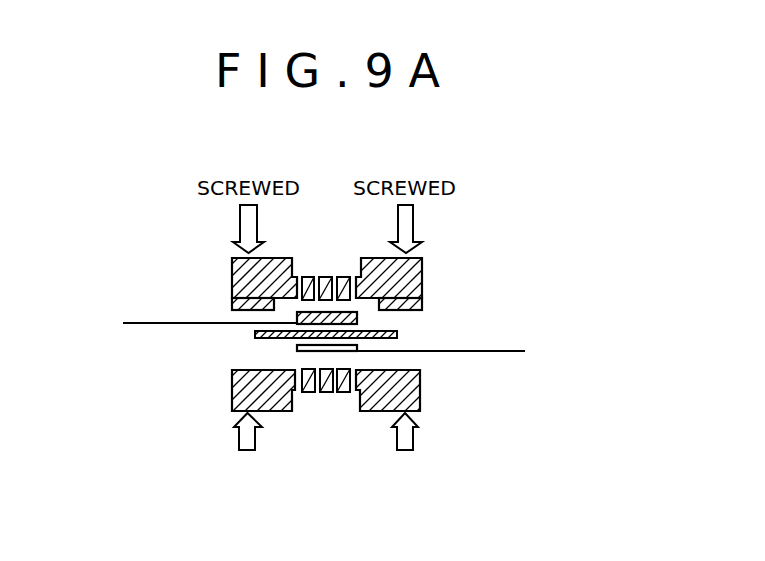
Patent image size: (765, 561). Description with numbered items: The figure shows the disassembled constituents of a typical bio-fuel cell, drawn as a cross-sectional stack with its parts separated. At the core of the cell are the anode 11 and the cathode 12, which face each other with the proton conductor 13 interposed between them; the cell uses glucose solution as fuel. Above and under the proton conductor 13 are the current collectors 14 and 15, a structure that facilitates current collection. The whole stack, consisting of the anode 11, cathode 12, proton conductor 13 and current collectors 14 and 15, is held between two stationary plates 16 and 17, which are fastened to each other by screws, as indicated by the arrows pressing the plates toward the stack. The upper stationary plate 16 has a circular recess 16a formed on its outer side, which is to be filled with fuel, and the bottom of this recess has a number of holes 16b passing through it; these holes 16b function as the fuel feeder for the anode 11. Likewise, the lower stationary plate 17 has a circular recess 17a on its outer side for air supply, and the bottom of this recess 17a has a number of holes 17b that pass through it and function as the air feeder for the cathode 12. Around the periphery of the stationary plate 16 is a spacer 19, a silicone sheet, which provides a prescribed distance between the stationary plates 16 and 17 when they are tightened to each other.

The anode 11 is at (357, 316).
The cathode 12 is at (297, 348).
The proton conductor 13 is at (255, 334).
The current collector 14 is at (143, 323).
The current collector 15 is at (495, 351).
The stationary plate 16 is at (402, 276).
The circular recess 16a is at (293, 263).
The holes 16b is at (347, 277).
The stationary plate 17 is at (420, 390).
The circular recess 17a is at (295, 400).
The holes 17b is at (333, 386).
The spacer 19 is at (233, 303).